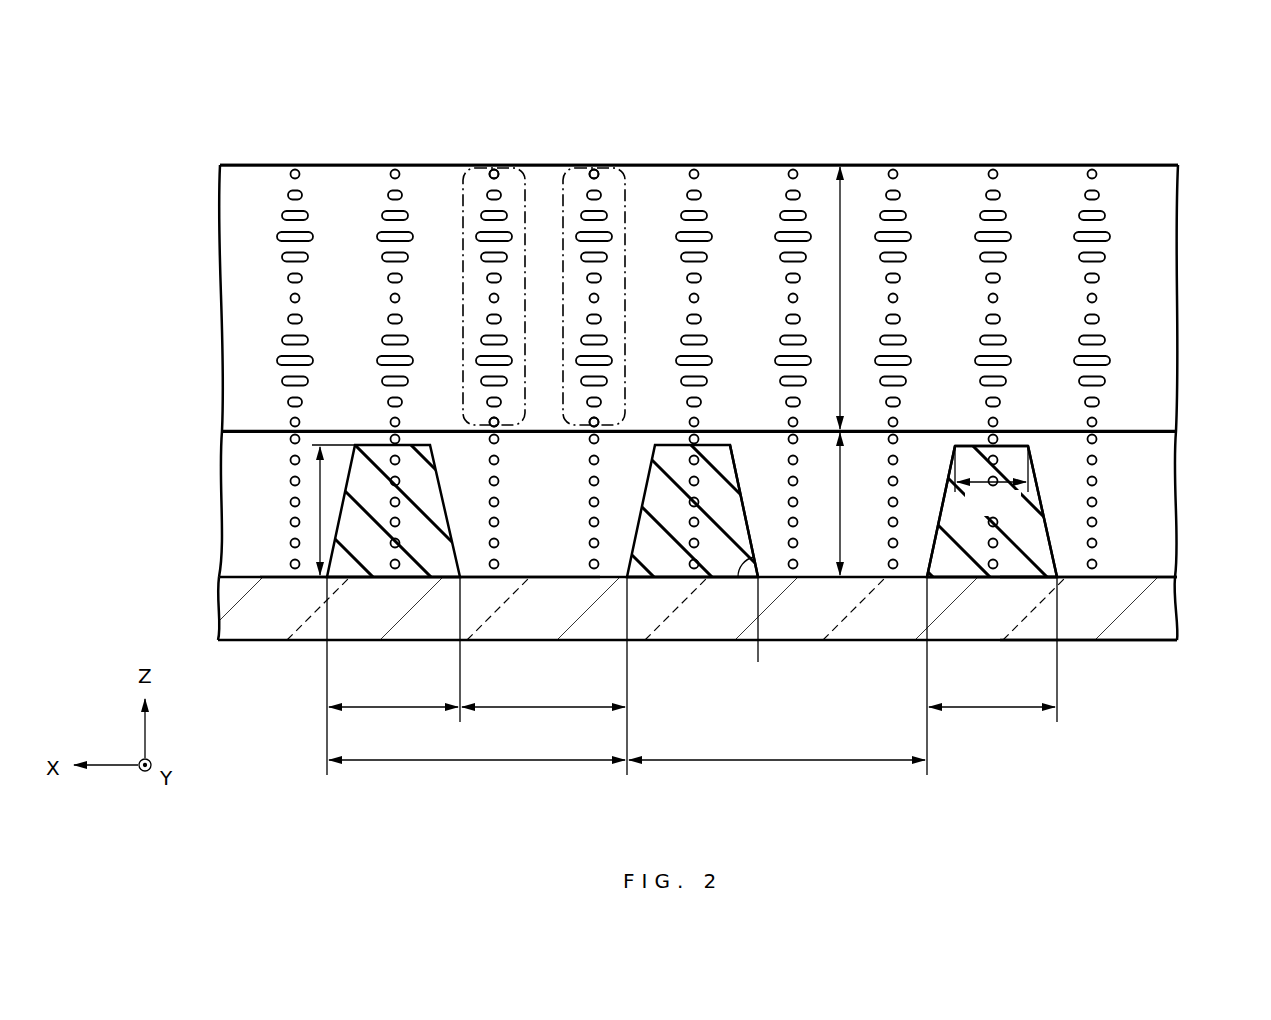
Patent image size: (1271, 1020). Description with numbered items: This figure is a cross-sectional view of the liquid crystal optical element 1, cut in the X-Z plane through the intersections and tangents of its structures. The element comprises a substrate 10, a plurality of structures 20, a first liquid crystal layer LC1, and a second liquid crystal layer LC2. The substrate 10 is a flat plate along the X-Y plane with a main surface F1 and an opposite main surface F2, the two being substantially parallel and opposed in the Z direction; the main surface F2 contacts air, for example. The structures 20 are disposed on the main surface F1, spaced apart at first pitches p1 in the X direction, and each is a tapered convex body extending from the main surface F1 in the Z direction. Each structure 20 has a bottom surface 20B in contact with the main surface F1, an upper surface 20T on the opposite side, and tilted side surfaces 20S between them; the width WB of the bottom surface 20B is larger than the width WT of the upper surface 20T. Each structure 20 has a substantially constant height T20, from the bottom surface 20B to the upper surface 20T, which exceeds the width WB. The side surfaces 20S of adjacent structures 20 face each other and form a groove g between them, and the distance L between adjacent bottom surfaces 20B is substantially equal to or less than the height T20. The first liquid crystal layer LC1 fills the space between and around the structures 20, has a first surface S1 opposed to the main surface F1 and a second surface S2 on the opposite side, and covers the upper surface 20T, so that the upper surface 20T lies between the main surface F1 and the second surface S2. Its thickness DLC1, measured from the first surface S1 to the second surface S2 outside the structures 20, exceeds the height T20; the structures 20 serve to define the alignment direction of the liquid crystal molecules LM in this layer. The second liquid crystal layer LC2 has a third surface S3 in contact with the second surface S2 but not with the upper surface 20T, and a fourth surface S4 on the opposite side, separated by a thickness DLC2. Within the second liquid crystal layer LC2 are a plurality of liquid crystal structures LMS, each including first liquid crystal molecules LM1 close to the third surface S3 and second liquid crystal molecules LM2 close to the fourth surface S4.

The liquid crystal optical element 1 is at (1150, 95).
The substrate 10 is at (1165, 611).
The structure 20 is at (679, 567).
The bottom surface 20B is at (717, 578).
The side surface 20S is at (746, 503).
The upper surface 20T is at (1010, 445).
The first surface S1 is at (256, 578).
The second surface S2 is at (238, 431).
The third surface S3 is at (243, 434).
The fourth surface S4 is at (232, 165).
The main surface F1 is at (1150, 576).
The main surface F2 is at (1140, 642).
The first liquid crystal layer LC1 is at (1172, 498).
The second liquid crystal layer LC2 is at (1172, 300).
The liquid crystal molecule LM is at (490, 298).
The first liquid crystal molecule LM1 is at (491, 420).
The second liquid crystal molecule LM2 is at (594, 172).
The liquid crystal structure LMS is at (465, 170).
The thickness DLC1 is at (846, 540).
The thickness DLC2 is at (843, 210).
The height T20 is at (318, 508).
The width WT is at (991, 481).
The width WB is at (692, 676).
The distance L is at (544, 676).
The groove g is at (511, 572).
The first pitch p1 is at (627, 775).